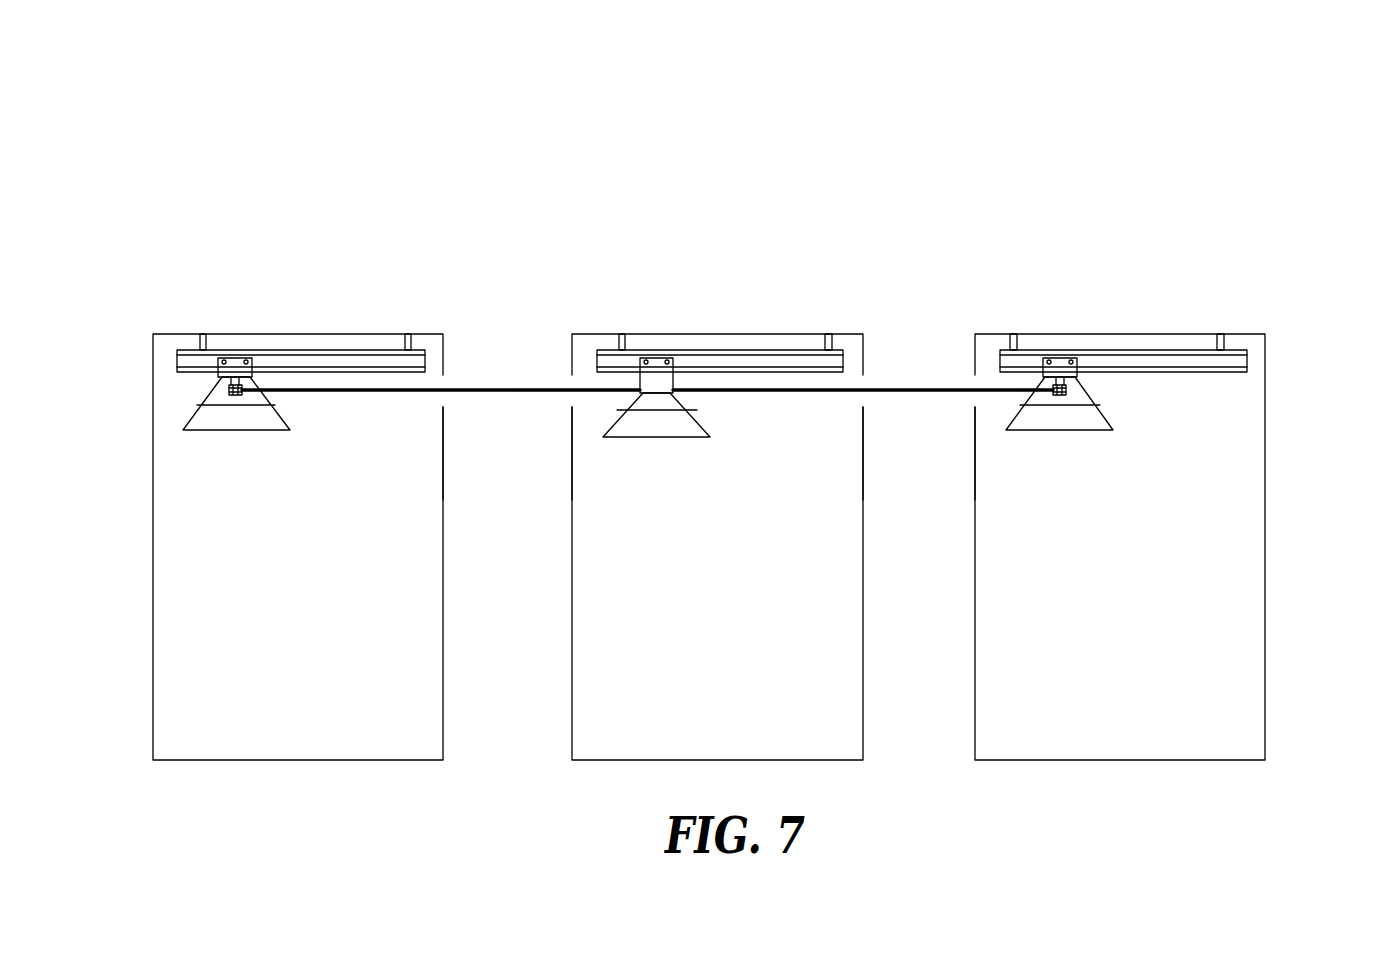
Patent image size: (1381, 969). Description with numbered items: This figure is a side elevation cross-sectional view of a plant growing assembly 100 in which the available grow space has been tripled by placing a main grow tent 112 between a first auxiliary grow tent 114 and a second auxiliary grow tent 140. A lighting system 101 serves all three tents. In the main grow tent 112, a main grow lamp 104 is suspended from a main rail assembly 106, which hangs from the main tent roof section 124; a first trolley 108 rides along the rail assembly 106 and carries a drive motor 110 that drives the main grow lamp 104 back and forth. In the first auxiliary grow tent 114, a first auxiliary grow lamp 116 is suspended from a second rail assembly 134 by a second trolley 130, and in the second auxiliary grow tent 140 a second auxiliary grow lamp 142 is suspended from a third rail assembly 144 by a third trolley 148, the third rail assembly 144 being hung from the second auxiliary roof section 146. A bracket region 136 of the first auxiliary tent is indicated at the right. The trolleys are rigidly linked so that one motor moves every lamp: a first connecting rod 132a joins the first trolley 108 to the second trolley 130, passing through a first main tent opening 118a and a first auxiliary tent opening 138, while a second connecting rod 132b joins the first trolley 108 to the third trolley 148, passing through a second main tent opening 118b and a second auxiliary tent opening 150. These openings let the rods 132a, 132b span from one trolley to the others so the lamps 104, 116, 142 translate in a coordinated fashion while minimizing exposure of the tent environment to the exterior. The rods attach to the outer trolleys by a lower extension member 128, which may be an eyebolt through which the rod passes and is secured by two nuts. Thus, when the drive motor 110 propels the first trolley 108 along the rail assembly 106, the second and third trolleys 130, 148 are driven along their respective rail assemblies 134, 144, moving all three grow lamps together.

The plant growing assembly 100 is at (1115, 204).
The lighting system 101 is at (816, 343).
The main grow lamp 104 is at (657, 425).
The rail assembly 106 is at (612, 360).
The trolley 108 is at (658, 370).
The drive motor 110 is at (656, 375).
The main grow tent 112 is at (572, 760).
The first auxiliary grow tent 114 is at (1265, 760).
The first auxiliary grow lamp 116 is at (1093, 418).
The first main tent opening 118a is at (867, 402).
The second main tent opening 118b is at (568, 402).
The main tent roof section 124 is at (884, 335).
The lower extension member 128 is at (222, 378).
The second trolley 130 is at (1057, 368).
The first connecting rod 132a is at (940, 388).
The second connecting rod 132b is at (476, 388).
The second rail assembly 134 is at (1032, 352).
The right light fixture assembly 136 is at (1277, 352).
The first auxiliary tent opening 138 is at (971, 402).
The second auxiliary grow tent 140 is at (153, 760).
The second auxiliary grow lamp 142 is at (198, 423).
The third rail assembly 144 is at (383, 362).
The second auxiliary roof section 146 is at (140, 342).
The third trolley 148 is at (232, 368).
The second auxiliary tent opening 150 is at (447, 402).